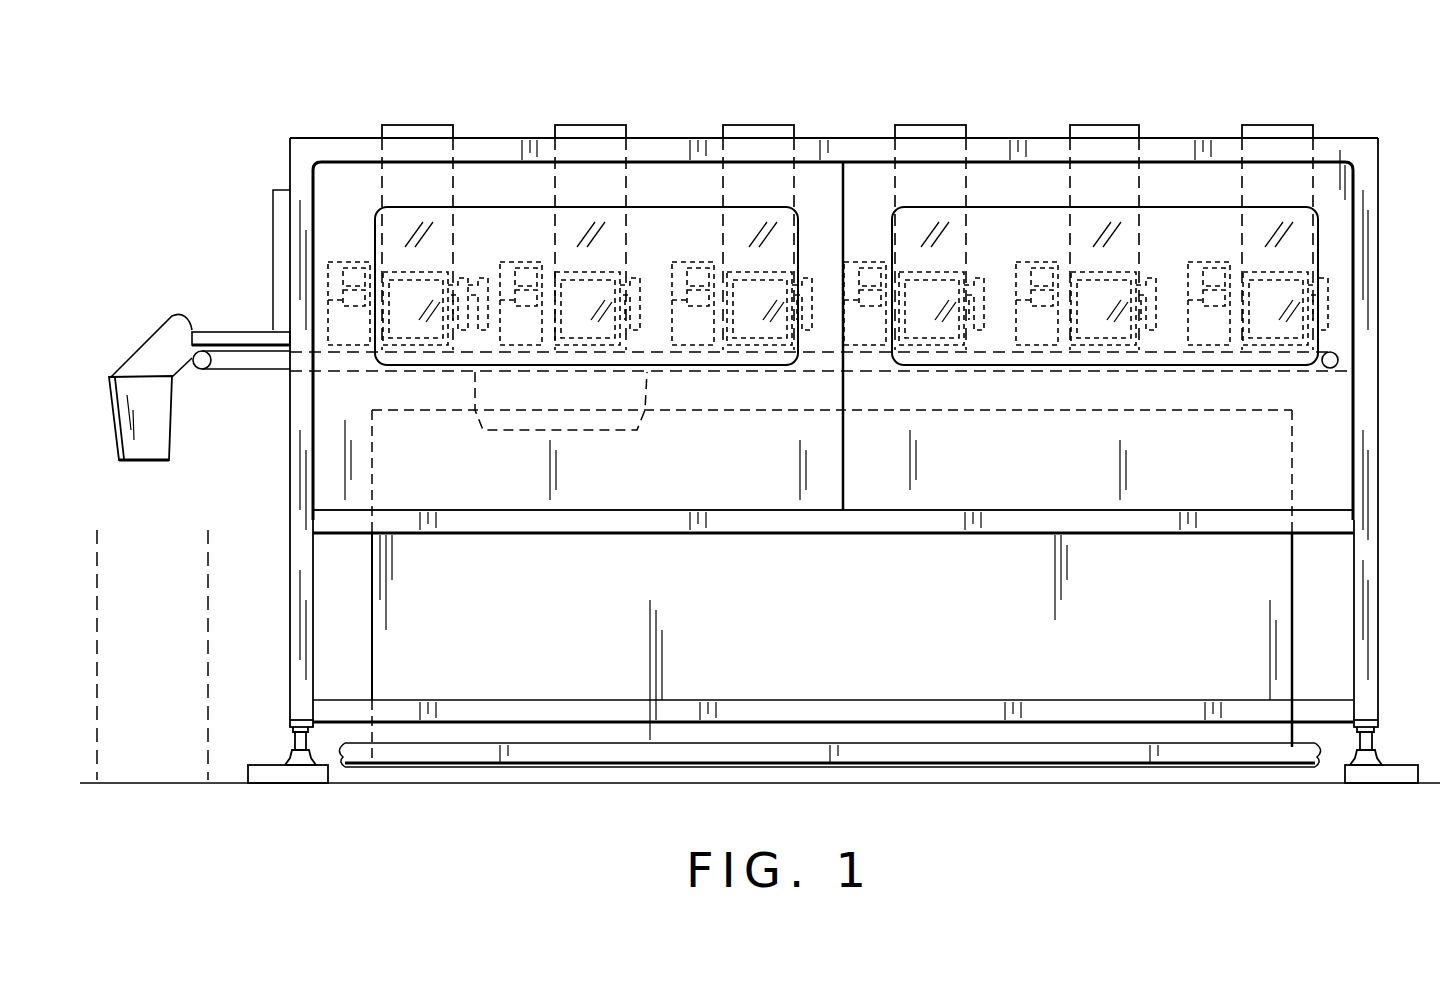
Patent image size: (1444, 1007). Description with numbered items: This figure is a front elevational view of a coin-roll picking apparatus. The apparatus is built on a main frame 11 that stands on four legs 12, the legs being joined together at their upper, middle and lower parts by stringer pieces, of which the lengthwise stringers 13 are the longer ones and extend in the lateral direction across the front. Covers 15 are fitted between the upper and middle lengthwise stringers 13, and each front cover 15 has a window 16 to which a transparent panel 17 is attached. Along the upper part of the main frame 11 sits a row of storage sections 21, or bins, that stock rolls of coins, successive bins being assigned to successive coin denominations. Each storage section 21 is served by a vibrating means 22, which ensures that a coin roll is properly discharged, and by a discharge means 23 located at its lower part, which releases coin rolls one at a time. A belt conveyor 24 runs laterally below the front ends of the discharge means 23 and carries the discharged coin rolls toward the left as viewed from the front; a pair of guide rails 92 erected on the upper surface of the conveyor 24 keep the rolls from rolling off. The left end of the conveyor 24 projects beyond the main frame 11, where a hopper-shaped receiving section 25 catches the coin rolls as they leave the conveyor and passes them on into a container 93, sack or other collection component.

The main frame 11 is at (1380, 450).
The legs 12 is at (289, 587).
The lengthwise stringers 13 is at (1335, 145).
The covers 15 is at (770, 490).
The window 16 is at (650, 372).
The transparent panel 17 is at (653, 340).
The storage sections 21 is at (434, 100).
The vibrating means 22 is at (343, 232).
The discharge means 23 is at (470, 255).
The conveyor 24 is at (245, 350).
The receiving section 25 is at (152, 440).
The guide rails 92 is at (210, 332).
The container 93 is at (208, 683).